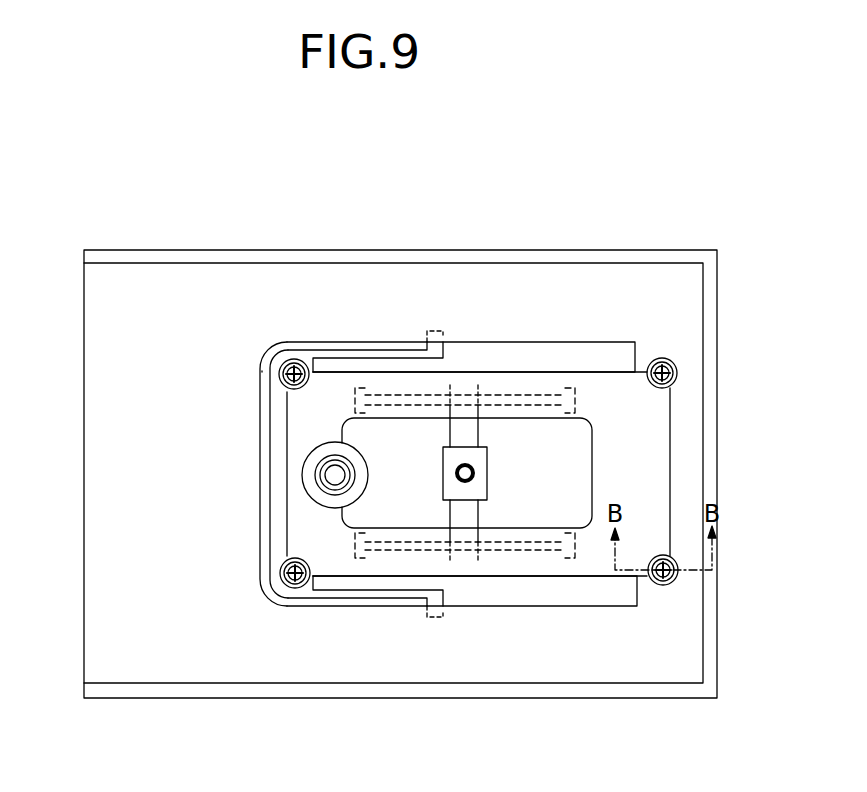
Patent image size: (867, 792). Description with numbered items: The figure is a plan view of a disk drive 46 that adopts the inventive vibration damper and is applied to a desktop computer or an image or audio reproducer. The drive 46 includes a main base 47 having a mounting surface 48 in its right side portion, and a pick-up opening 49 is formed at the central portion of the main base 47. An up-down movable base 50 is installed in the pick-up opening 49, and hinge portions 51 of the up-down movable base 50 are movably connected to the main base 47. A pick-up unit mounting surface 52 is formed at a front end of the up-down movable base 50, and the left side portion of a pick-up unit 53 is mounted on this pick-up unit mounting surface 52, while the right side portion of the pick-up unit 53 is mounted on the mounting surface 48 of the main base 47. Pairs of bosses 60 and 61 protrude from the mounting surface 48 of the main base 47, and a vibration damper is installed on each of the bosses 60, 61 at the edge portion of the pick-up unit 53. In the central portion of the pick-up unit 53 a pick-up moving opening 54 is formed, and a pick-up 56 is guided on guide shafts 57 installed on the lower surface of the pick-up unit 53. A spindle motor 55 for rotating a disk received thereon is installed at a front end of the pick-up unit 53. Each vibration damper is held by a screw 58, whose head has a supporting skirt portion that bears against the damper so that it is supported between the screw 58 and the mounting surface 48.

The drive 46 is at (483, 240).
The main base 47 is at (648, 250).
The mounting surface 48 is at (688, 428).
The pick-up opening 49 is at (573, 350).
The up-down movable base 50 is at (365, 358).
The hinge portions 51 is at (430, 332).
The pick-up unit mounting surface 52 is at (272, 493).
The pick-up unit 53 is at (655, 405).
The pick-up moving opening 54 is at (577, 452).
The spindle motor 55 is at (305, 440).
The pick-up 56 is at (483, 483).
The guide shafts 57 is at (513, 392).
The screw 58 is at (290, 360).
The bosses 60 is at (665, 358).
The bosses 61 is at (262, 372).